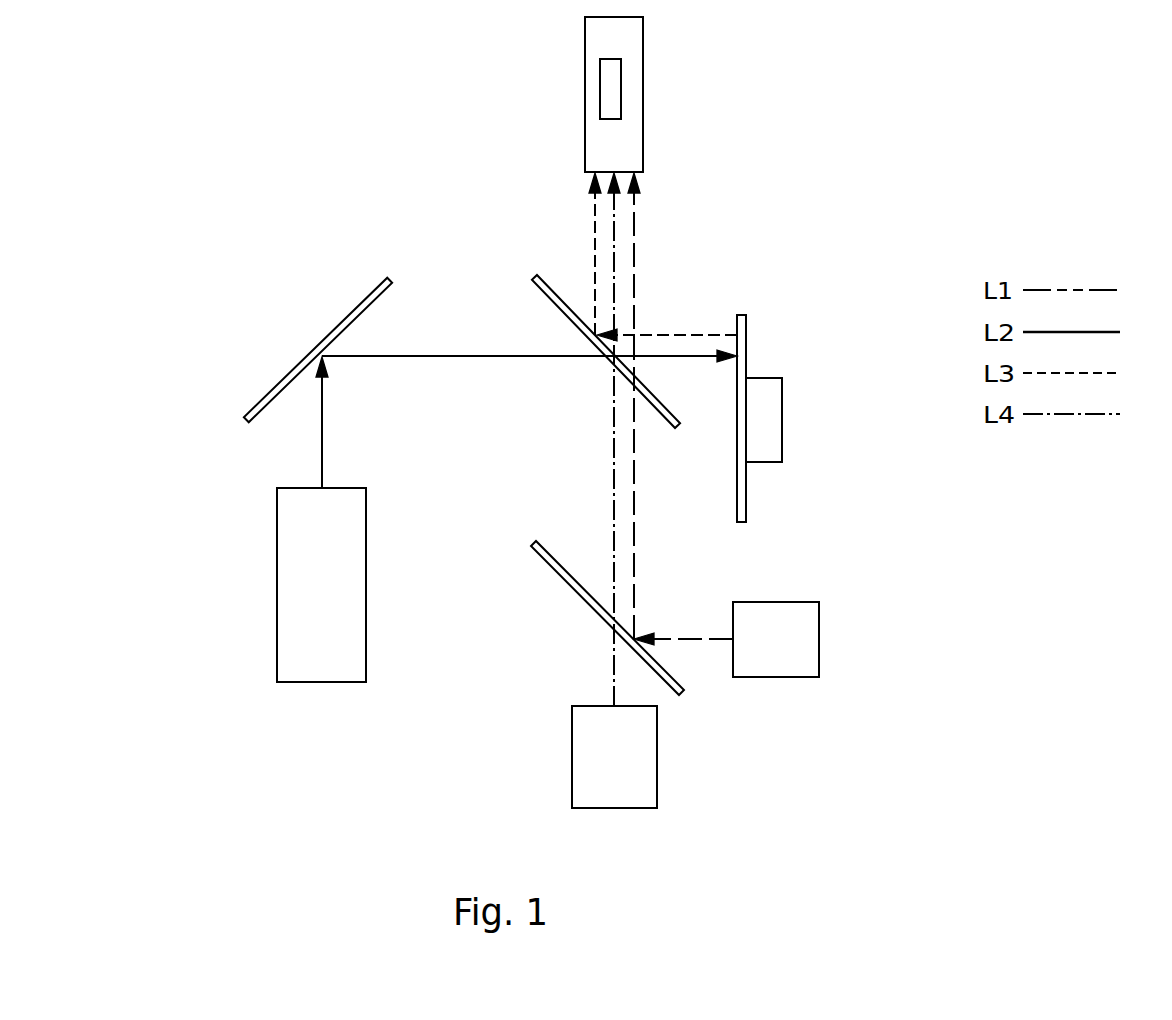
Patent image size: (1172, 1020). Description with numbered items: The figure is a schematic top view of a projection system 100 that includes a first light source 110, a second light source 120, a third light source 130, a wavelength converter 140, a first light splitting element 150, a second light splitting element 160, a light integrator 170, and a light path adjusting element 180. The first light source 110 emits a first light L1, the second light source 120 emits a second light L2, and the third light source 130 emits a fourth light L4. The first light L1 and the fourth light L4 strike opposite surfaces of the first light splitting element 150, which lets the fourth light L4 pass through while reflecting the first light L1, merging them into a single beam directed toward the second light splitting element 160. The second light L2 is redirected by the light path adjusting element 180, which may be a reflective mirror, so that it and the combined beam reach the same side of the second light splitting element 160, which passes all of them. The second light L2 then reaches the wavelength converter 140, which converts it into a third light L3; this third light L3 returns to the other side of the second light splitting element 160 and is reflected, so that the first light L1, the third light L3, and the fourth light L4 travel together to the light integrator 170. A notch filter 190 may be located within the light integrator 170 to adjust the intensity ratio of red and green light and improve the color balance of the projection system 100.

The projection system 100 is at (165, 47).
The first light source 110 is at (810, 640).
The second light source 120 is at (357, 612).
The third light source 130 is at (648, 762).
The wavelength converter 140 is at (771, 423).
The first light splitting element 150 is at (548, 568).
The second light splitting element 160 is at (542, 302).
The light integrator 170 is at (630, 100).
The light path adjusting element 180 is at (358, 305).
The notch filter 190 is at (607, 88).
The first light L1 is at (635, 555).
The second light L2 is at (324, 430).
The third light L3 is at (683, 333).
The fourth light L4 is at (612, 685).